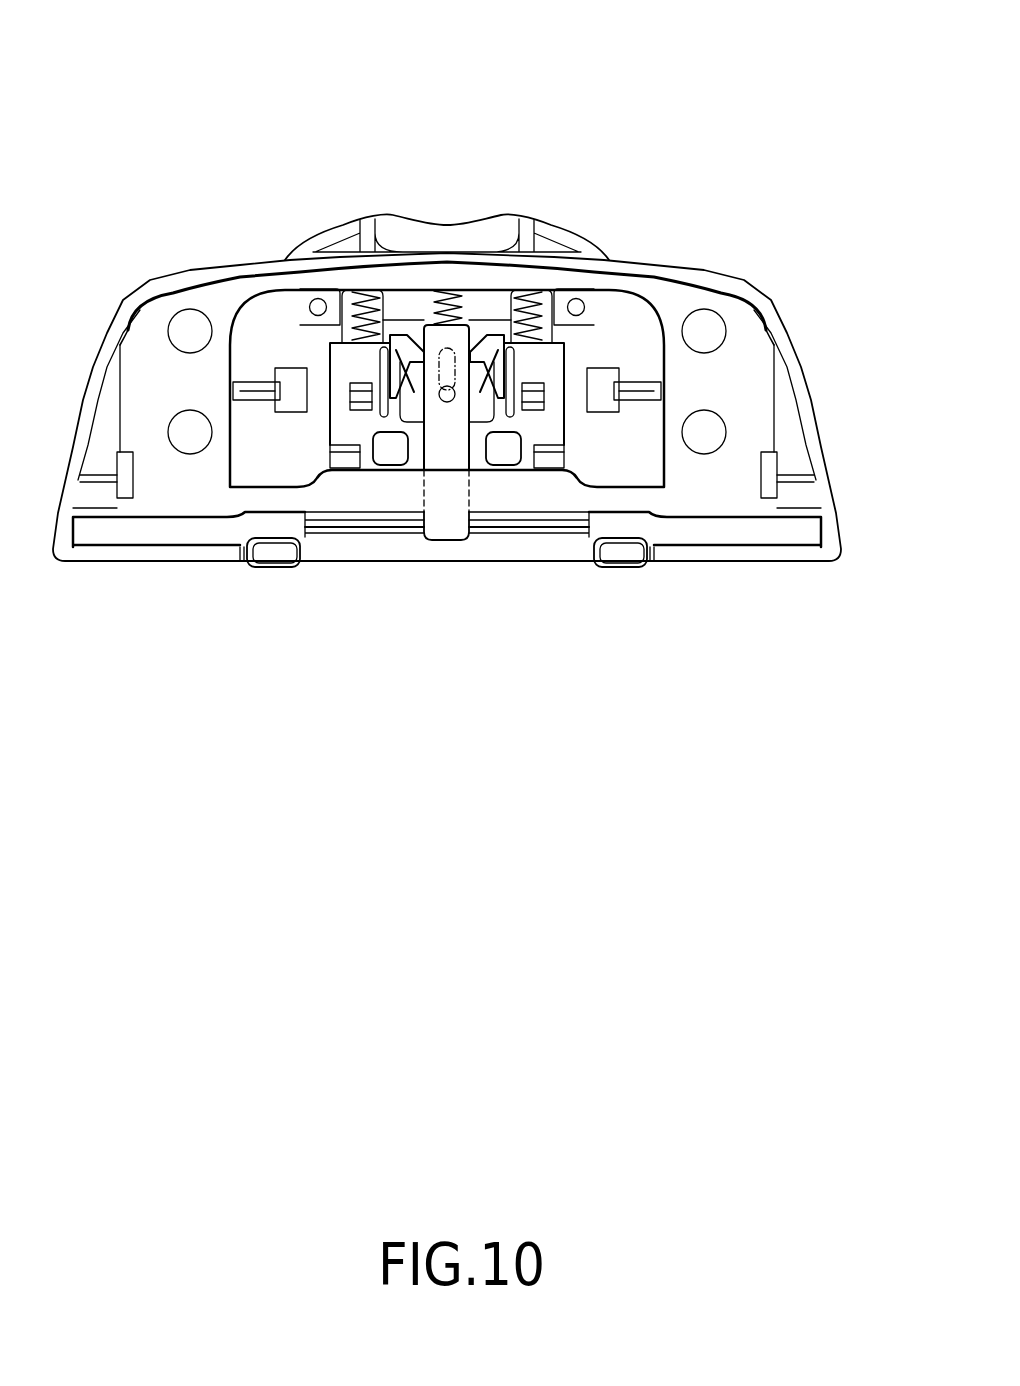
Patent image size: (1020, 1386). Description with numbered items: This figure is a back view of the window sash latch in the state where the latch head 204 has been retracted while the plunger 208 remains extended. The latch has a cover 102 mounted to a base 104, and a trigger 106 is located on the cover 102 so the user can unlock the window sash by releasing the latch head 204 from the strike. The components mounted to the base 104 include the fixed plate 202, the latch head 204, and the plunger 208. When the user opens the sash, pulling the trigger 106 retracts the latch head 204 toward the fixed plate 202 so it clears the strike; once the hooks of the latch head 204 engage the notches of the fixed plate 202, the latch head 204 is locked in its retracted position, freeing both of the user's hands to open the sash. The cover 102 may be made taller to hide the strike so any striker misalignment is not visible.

The cover 102 is at (807, 383).
The base 104 is at (668, 303).
The trigger 106 is at (364, 233).
The fixed plate 202 is at (496, 300).
The latch head 204 is at (523, 432).
The plunger 208 is at (438, 528).